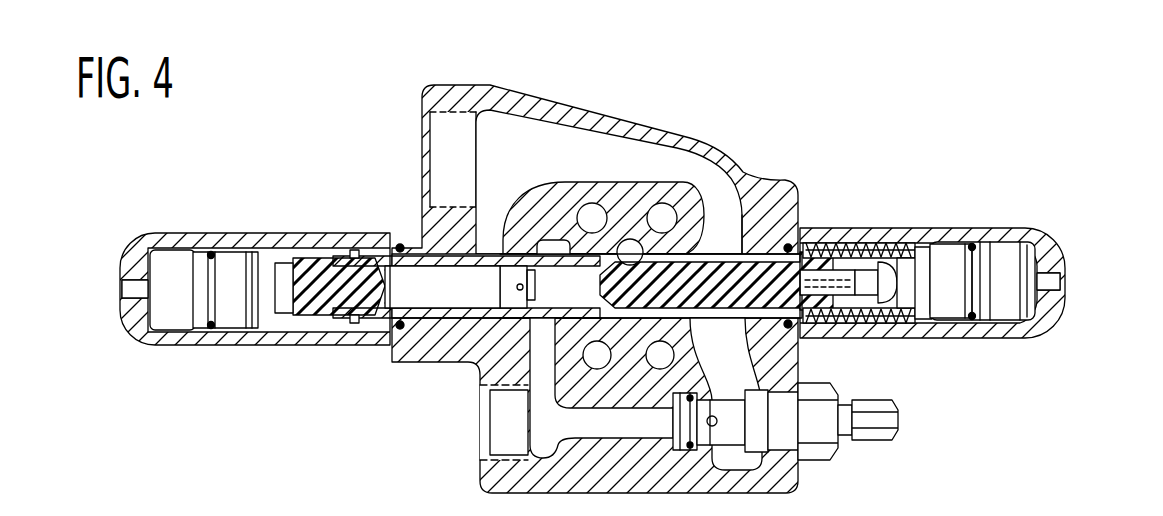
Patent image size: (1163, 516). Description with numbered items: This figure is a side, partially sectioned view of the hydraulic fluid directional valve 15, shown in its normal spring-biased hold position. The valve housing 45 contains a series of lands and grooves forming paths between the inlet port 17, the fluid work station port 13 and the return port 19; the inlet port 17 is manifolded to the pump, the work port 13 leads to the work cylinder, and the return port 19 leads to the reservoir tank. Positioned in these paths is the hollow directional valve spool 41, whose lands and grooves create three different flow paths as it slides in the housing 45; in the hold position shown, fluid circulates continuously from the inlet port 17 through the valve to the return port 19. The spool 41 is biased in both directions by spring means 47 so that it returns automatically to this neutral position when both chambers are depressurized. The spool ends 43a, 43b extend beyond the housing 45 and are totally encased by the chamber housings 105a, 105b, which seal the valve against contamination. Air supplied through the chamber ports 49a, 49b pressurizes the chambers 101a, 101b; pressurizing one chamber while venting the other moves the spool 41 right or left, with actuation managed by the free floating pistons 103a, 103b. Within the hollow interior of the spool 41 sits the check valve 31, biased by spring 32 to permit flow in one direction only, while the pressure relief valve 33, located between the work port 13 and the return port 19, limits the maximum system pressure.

The fluid work station port 13 is at (480, 422).
The directional valve 15 is at (600, 284).
The inlet port 17 is at (637, 250).
The return port 19 is at (421, 168).
The check valve 31 is at (507, 297).
The spring 32 is at (423, 307).
The pressure relief valve 33 is at (835, 443).
The valve spool 41 is at (747, 180).
The spool end 43a is at (302, 252).
The spool end 43b is at (832, 247).
The valve housing 45 is at (803, 198).
The spring means 47 is at (880, 333).
The chamber port 49a is at (118, 284).
The chamber port 49b is at (1067, 285).
The chamber 101a is at (167, 257).
The chamber 101b is at (1010, 263).
The free floating piston 103a is at (230, 330).
The free floating piston 103b is at (998, 228).
The chamber housing 105a is at (158, 347).
The chamber housing 105b is at (1053, 330).